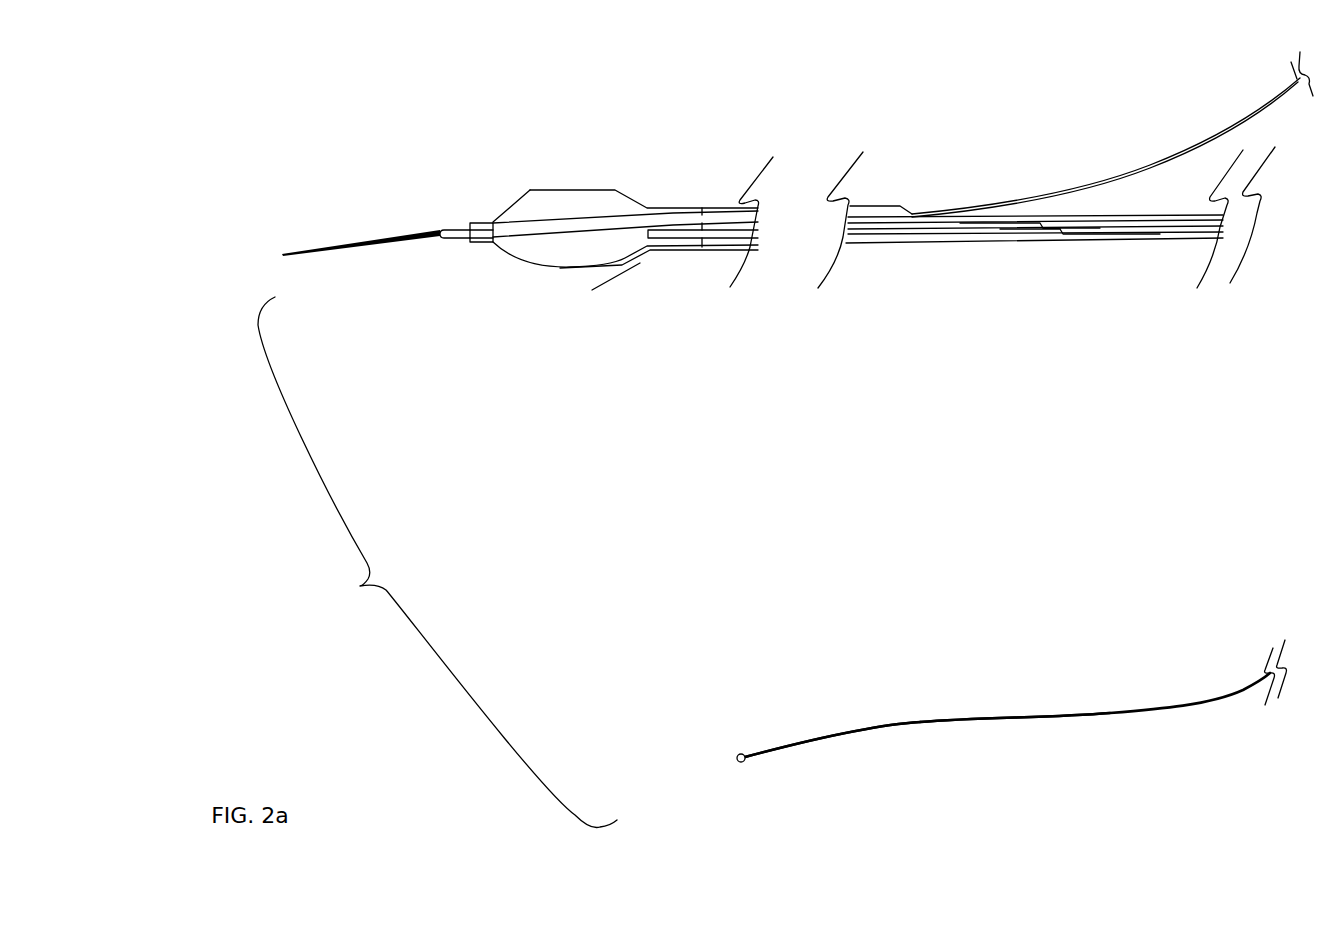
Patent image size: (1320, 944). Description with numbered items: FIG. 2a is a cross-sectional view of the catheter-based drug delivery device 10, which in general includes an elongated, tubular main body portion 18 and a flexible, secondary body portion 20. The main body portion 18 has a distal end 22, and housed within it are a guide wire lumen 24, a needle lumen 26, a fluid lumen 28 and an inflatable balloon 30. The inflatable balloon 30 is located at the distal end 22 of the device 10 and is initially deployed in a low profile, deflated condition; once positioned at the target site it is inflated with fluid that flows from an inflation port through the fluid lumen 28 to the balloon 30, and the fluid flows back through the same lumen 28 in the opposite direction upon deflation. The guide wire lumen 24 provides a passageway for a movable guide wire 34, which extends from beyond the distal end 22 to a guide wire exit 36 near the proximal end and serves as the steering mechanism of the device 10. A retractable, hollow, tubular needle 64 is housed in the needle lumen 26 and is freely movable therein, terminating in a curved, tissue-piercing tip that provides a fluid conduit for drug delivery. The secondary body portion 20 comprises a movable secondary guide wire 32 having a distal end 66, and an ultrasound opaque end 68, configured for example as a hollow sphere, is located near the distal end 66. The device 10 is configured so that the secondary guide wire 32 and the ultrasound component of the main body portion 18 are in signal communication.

The catheter-based drug delivery device 10 is at (437, 562).
The main body portion 18 is at (731, 103).
The secondary body portion 20 is at (1092, 662).
The distal end 22 is at (535, 341).
The guide wire lumen 24 is at (523, 225).
The needle lumen 26 is at (643, 262).
The fluid lumen 28 is at (677, 230).
The inflatable balloon 30 is at (587, 188).
The secondary guide wire 32 is at (922, 725).
The guide wire 34 is at (360, 237).
The guide wire exit 36 is at (912, 200).
The retractable needle 64 is at (602, 287).
The distal end 66 is at (802, 699).
The ultrasound opaque end 68 is at (742, 763).